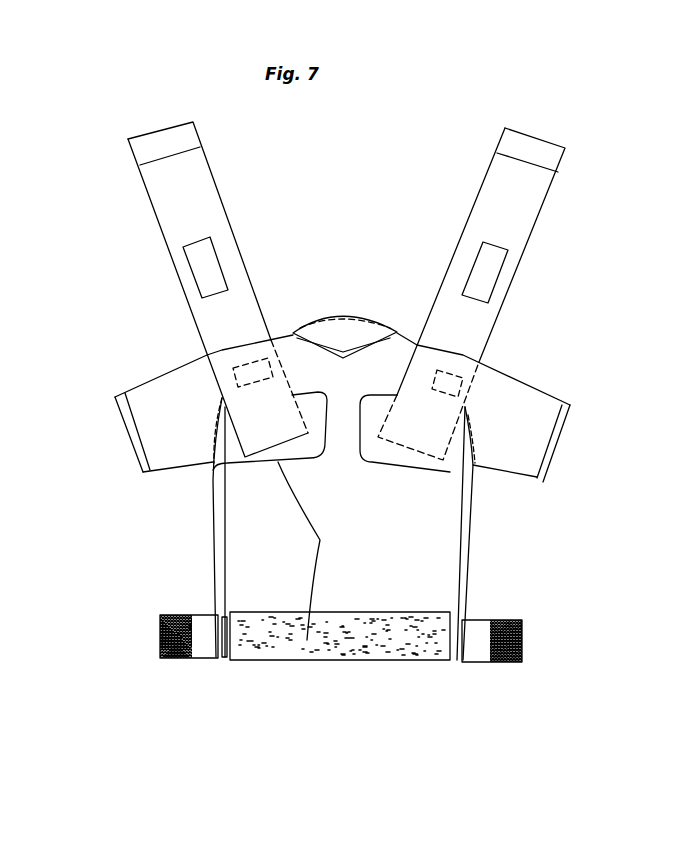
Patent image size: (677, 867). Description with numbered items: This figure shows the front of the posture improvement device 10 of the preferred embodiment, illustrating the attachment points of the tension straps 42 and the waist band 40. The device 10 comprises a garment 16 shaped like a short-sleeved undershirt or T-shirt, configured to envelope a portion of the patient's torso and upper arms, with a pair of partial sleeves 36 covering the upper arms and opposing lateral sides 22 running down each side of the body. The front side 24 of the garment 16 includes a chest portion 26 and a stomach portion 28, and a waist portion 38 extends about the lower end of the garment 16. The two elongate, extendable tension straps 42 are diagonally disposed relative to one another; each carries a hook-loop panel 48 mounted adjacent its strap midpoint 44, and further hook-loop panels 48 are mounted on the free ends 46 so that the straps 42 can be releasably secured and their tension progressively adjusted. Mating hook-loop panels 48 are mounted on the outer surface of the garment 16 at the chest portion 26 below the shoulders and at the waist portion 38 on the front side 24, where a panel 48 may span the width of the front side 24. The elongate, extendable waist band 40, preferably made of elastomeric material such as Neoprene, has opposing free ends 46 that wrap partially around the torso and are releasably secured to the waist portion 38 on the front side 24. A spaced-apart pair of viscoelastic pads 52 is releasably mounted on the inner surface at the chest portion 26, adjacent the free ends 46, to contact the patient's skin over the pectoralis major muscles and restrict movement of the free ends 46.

The posture improvement device 10 is at (222, 112).
The garment 16 is at (540, 385).
The lateral sides 22 is at (215, 553).
The front side 24 is at (307, 640).
The chest portion 26 is at (398, 333).
The stomach portion 28 is at (380, 573).
The partial sleeves 36 is at (115, 412).
The waist portion 38 is at (410, 663).
The waist band 40 is at (205, 660).
The tension straps 42 is at (143, 190).
The strap midpoint 44 is at (188, 293).
The free ends 46 is at (167, 130).
The hook-loop panel 48 is at (140, 150).
The viscoelastic pads 52 is at (227, 355).